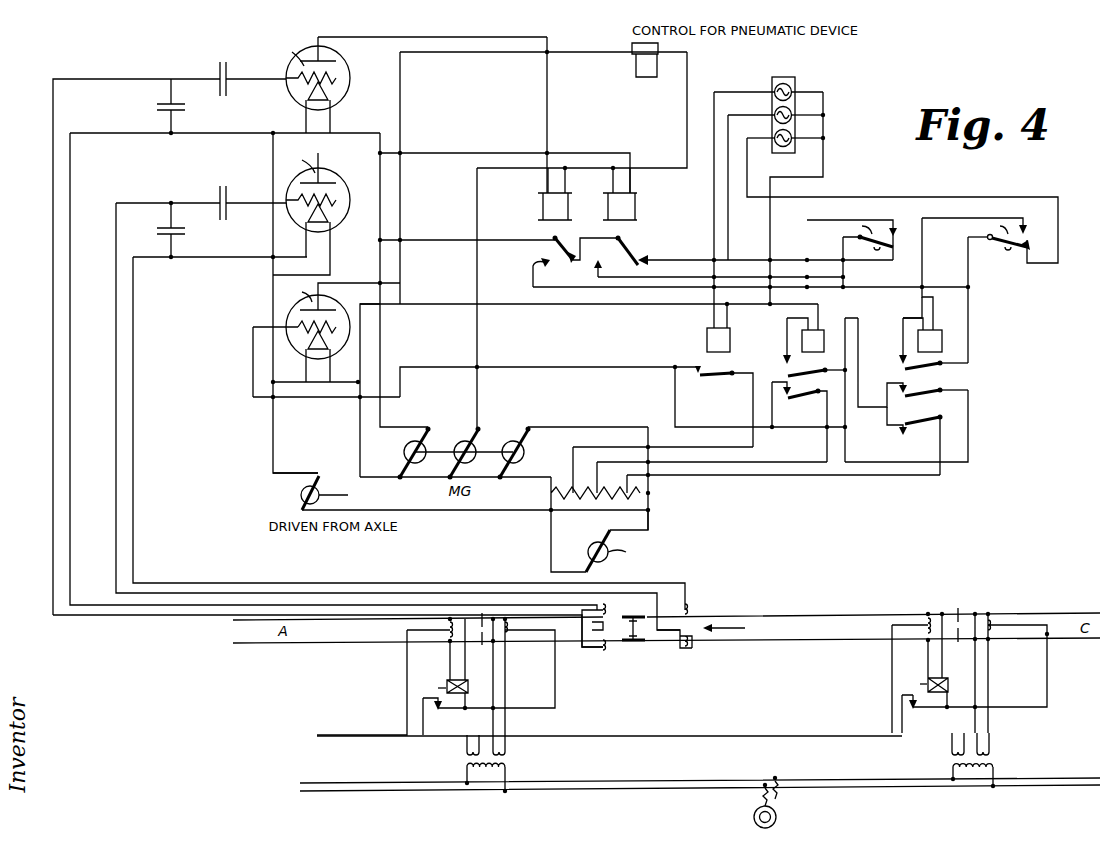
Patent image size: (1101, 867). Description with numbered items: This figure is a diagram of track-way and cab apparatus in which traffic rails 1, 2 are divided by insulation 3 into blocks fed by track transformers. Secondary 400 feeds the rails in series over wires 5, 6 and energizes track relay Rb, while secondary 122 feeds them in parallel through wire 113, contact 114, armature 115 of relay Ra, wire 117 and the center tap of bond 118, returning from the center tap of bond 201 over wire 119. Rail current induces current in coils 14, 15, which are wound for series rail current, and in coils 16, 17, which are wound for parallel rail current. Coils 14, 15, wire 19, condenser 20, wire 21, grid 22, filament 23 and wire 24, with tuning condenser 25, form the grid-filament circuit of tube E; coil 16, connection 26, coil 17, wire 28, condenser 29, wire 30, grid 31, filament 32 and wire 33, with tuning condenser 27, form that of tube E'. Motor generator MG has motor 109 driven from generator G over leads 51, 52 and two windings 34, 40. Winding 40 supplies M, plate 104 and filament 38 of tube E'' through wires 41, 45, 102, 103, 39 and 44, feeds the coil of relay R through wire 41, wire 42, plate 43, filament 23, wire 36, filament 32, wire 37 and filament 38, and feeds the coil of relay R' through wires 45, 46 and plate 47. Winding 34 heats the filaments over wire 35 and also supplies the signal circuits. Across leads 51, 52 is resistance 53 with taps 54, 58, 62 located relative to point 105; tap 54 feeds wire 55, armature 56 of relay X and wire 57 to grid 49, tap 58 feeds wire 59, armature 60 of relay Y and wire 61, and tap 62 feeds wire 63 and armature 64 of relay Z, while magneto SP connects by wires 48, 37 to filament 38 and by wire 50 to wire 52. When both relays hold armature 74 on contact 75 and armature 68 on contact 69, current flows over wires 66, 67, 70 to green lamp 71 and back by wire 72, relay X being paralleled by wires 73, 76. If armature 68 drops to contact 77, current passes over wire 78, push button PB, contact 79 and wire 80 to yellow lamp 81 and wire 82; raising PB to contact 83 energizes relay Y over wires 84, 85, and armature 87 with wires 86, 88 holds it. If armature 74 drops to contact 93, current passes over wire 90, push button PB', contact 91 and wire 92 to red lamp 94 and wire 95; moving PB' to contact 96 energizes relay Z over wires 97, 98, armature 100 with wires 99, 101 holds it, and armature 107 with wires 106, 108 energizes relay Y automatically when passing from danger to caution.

The traffic rail 1 is at (790, 607).
The traffic rail 2 is at (782, 652).
The insulation 3 is at (482, 632).
The wire 5 is at (470, 690).
The wire 6 is at (508, 680).
The coil 14 is at (605, 604).
The coil 15 is at (608, 650).
The coil 16 is at (690, 605).
The coil 17 is at (695, 648).
The wire 19 is at (311, 363).
The condenser 20 is at (218, 62).
The wire 21 is at (262, 84).
The grid 22 is at (297, 76).
The filament 23 is at (304, 96).
The wire 24 is at (212, 132).
The tuning condenser 25 is at (157, 107).
The connection 26 is at (675, 640).
The tuning condenser 27 is at (157, 231).
The wire 28 is at (383, 415).
The condenser 29 is at (221, 186).
The wire 30 is at (252, 210).
The grid 31 is at (335, 203).
The filament 32 is at (306, 224).
The wire 33 is at (207, 256).
The generator winding 34 is at (402, 455).
The wire 35 is at (384, 352).
The wire 36 is at (272, 172).
The wire 37 is at (332, 272).
The filament 38 is at (306, 342).
The wire 39 is at (359, 430).
The generator winding 40 is at (480, 440).
The wire 41 is at (475, 338).
The wire 42 is at (546, 98).
The plate 43 is at (340, 65).
The wire 44 is at (425, 478).
The wire 45 is at (592, 170).
The wire 46 is at (487, 152).
The plate 47 is at (340, 175).
The wire 48 is at (272, 444).
The grid 49 is at (335, 318).
The wire 50 is at (490, 511).
The lead 51 is at (550, 541).
The lead 52 is at (650, 527).
The resistance 53 is at (588, 497).
The tap 54 is at (572, 480).
The wire 55 is at (714, 447).
The armature 56 is at (713, 377).
The wire 57 is at (607, 366).
The tap 58 is at (596, 480).
The wire 59 is at (758, 462).
The armature 60 is at (798, 397).
The wire 61 is at (714, 426).
The tap 62 is at (626, 490).
The wire 63 is at (752, 475).
The armature 64 is at (935, 395).
The wire 66 is at (432, 240).
The wire 67 is at (588, 237).
The armature 68 is at (640, 243).
The contact 69 is at (656, 253).
The wire 70 is at (712, 216).
The green signal lamp 71 is at (730, 78).
The wire 72 is at (606, 302).
The wire 73 is at (712, 321).
The armature 74 is at (553, 249).
The contact 75 is at (567, 252).
The wire 76 is at (729, 323).
The contact 77 is at (598, 258).
The wire 78 is at (664, 278).
The contact 79 is at (896, 252).
The wire 80 is at (729, 213).
The yellow signal lamp 81 is at (738, 105).
The wire 82 is at (807, 102).
The contact 83 is at (893, 222).
The wire 84 is at (833, 219).
The wire 85 is at (822, 315).
The wire 86 is at (843, 350).
The armature 87 is at (785, 371).
The wire 88 is at (786, 343).
The wire 90 is at (751, 279).
The contact 91 is at (1030, 248).
The wire 92 is at (992, 185).
The contact 93 is at (532, 272).
The red signal lamp 94 is at (764, 134).
The wire 95 is at (807, 125).
The contact 96 is at (1028, 228).
The wire 97 is at (960, 216).
The wire 98 is at (935, 312).
The wire 99 is at (970, 323).
The armature 100 is at (945, 368).
The wire 101 is at (895, 338).
The wire 102 is at (668, 167).
The wire 103 is at (573, 52).
The plate 104 is at (272, 298).
The point 105 is at (649, 493).
The wire 106 is at (870, 462).
The armature 107 is at (928, 422).
The wire 108 is at (865, 372).
The motor 109 is at (530, 443).
The wire 113 is at (425, 727).
The contact 114 is at (430, 705).
The armature 115 is at (468, 710).
The wire 117 is at (538, 708).
The bond 118 is at (508, 632).
The wire 119 is at (672, 732).
The secondary 122 is at (468, 745).
The bond 201 is at (926, 618).
The secondary 400 is at (510, 750).